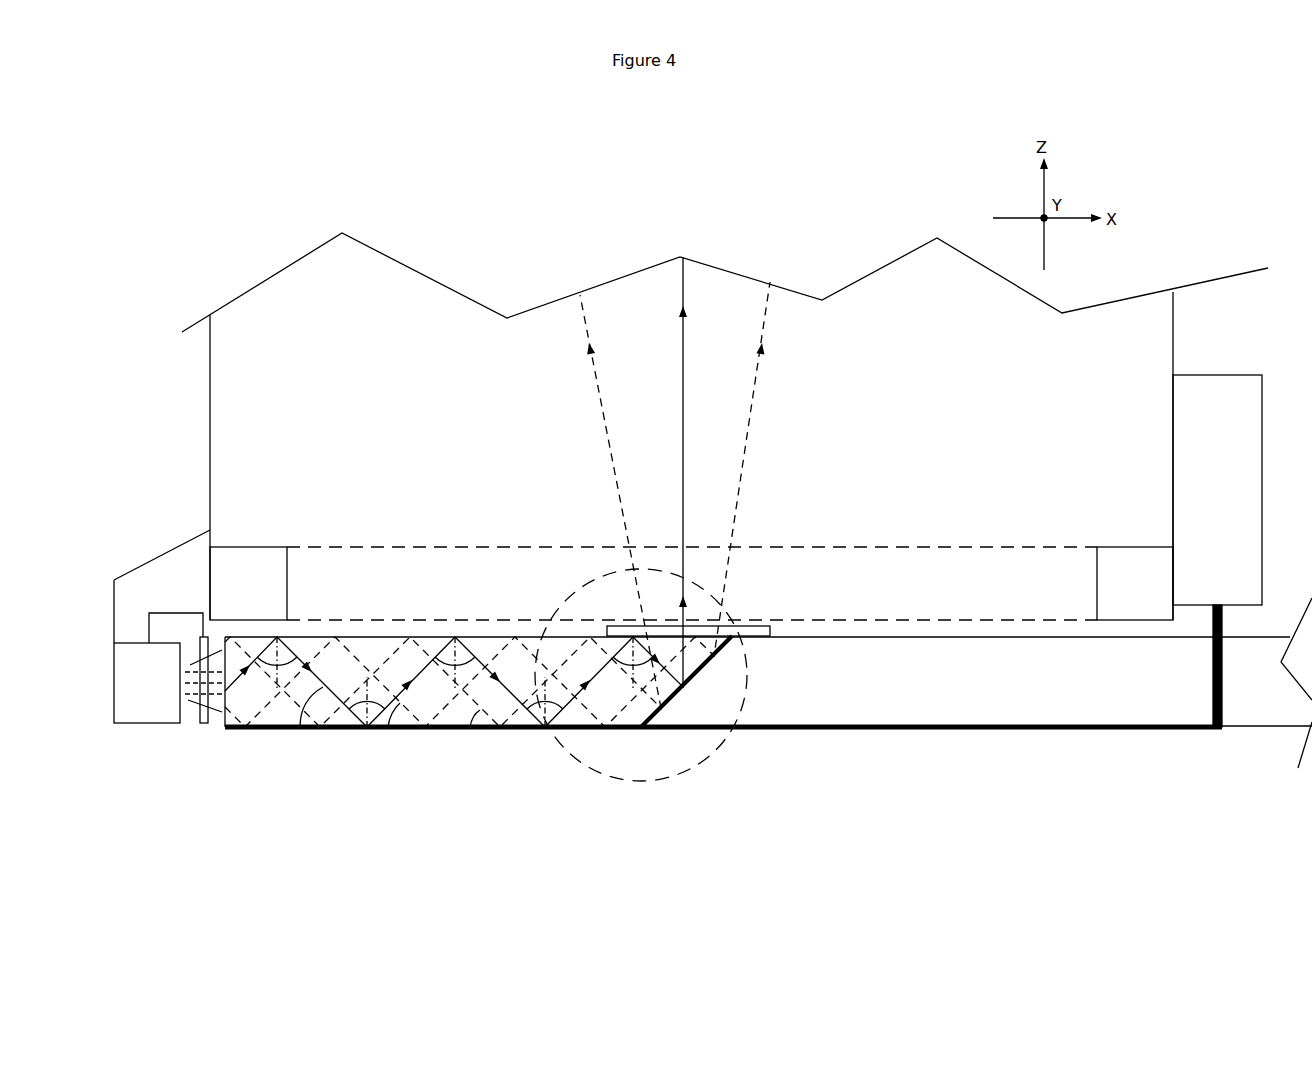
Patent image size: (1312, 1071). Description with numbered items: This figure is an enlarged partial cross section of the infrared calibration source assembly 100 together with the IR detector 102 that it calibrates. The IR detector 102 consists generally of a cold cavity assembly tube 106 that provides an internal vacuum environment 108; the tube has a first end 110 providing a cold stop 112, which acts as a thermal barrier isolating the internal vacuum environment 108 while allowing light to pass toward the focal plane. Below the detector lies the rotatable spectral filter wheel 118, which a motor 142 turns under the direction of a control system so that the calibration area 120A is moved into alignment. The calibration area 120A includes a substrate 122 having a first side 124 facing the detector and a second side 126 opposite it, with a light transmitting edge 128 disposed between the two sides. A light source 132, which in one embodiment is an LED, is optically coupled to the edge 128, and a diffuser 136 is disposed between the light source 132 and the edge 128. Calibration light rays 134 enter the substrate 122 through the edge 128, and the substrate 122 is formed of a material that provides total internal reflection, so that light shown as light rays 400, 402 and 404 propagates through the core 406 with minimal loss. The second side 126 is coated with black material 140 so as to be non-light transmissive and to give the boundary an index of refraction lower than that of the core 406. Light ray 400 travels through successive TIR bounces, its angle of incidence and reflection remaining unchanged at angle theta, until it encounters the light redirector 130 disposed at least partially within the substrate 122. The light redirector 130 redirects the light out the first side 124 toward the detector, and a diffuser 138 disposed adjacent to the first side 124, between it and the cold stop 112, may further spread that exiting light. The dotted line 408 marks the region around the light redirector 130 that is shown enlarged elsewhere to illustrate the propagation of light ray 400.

The infrared calibration source assembly 100 is at (1183, 832).
The IR detector 102 is at (200, 385).
The cold cavity assembly tube 106 is at (1173, 335).
The internal vacuum environment 108 is at (294, 485).
The first end 110 is at (248, 620).
The cold stop 112 is at (730, 583).
The rotatable spectral filter wheel 118 is at (1203, 740).
The calibration area 120A is at (1147, 831).
The substrate 122 is at (998, 720).
The first side 124 is at (425, 637).
The second side 126 is at (858, 727).
The light transmitting edge 128 is at (222, 718).
The light redirector 130 is at (680, 697).
The light source 132 is at (147, 683).
The calibration light rays 134 is at (198, 700).
The diffuser 136 is at (203, 630).
The diffuser 138 is at (765, 640).
The coating material 140 is at (588, 730).
The motor 142 is at (1217, 490).
The light ray 400 is at (300, 727).
The light ray 402 is at (388, 727).
The light ray 404 is at (470, 727).
The core 406 is at (929, 677).
The dotted line 408 is at (575, 590).